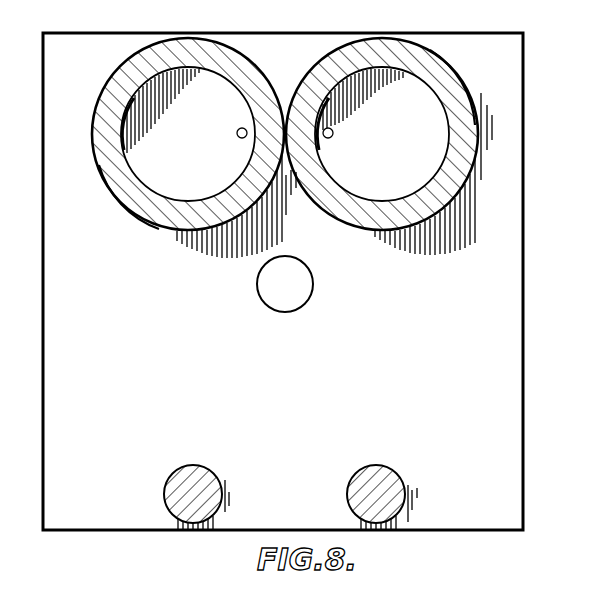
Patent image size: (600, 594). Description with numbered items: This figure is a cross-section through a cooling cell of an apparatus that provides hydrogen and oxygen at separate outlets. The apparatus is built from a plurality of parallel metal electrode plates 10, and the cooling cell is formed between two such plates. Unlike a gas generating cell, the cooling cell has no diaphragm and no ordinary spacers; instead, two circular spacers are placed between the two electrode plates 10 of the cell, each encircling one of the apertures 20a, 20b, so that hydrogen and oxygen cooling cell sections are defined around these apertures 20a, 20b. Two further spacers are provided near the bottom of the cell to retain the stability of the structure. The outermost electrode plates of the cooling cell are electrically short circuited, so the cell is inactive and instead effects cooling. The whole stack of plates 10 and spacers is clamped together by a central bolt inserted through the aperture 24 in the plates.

The metal electrode plate 10 is at (60, 302).
The aperture 20a is at (237, 136).
The aperture 20b is at (334, 136).
The aperture 24 is at (292, 300).